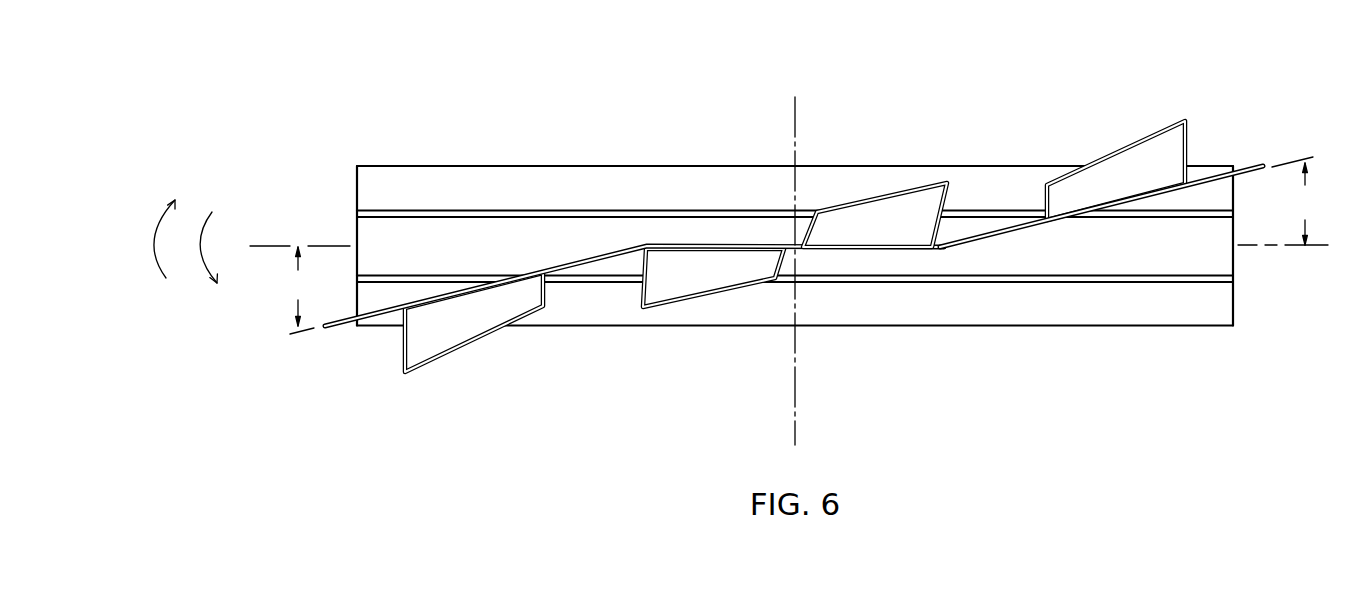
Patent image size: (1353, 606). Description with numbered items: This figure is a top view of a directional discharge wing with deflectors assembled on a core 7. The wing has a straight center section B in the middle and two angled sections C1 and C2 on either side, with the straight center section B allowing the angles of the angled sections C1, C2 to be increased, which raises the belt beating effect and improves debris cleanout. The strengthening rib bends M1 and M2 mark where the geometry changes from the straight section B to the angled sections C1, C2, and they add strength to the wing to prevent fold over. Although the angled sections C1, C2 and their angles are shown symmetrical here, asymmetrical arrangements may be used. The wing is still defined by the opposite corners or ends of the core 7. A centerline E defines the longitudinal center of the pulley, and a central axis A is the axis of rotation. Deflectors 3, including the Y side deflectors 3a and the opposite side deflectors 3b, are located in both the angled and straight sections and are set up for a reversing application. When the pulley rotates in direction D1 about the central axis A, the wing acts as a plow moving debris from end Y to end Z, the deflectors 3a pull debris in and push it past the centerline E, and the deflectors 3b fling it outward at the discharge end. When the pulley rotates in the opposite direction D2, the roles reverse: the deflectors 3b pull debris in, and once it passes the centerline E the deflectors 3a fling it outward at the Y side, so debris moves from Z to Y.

The deflectors 3 is at (794, 194).
The Y side deflectors 3a is at (472, 312).
The X side deflectors 3b is at (1033, 143).
The core 7 is at (1200, 295).
The central axis A is at (788, 247).
The straight center section B is at (762, 250).
The angled wing section C1 is at (552, 275).
The angled wing section C2 is at (1020, 227).
The strengthening rib bend M1 is at (640, 308).
The strengthening rib bend M2 is at (943, 250).
The centerline E is at (796, 258).
The Y side Y is at (372, 112).
The Z side Z is at (1217, 112).
The direction of rotation D1 is at (197, 233).
The direction of rotation D2 is at (190, 256).